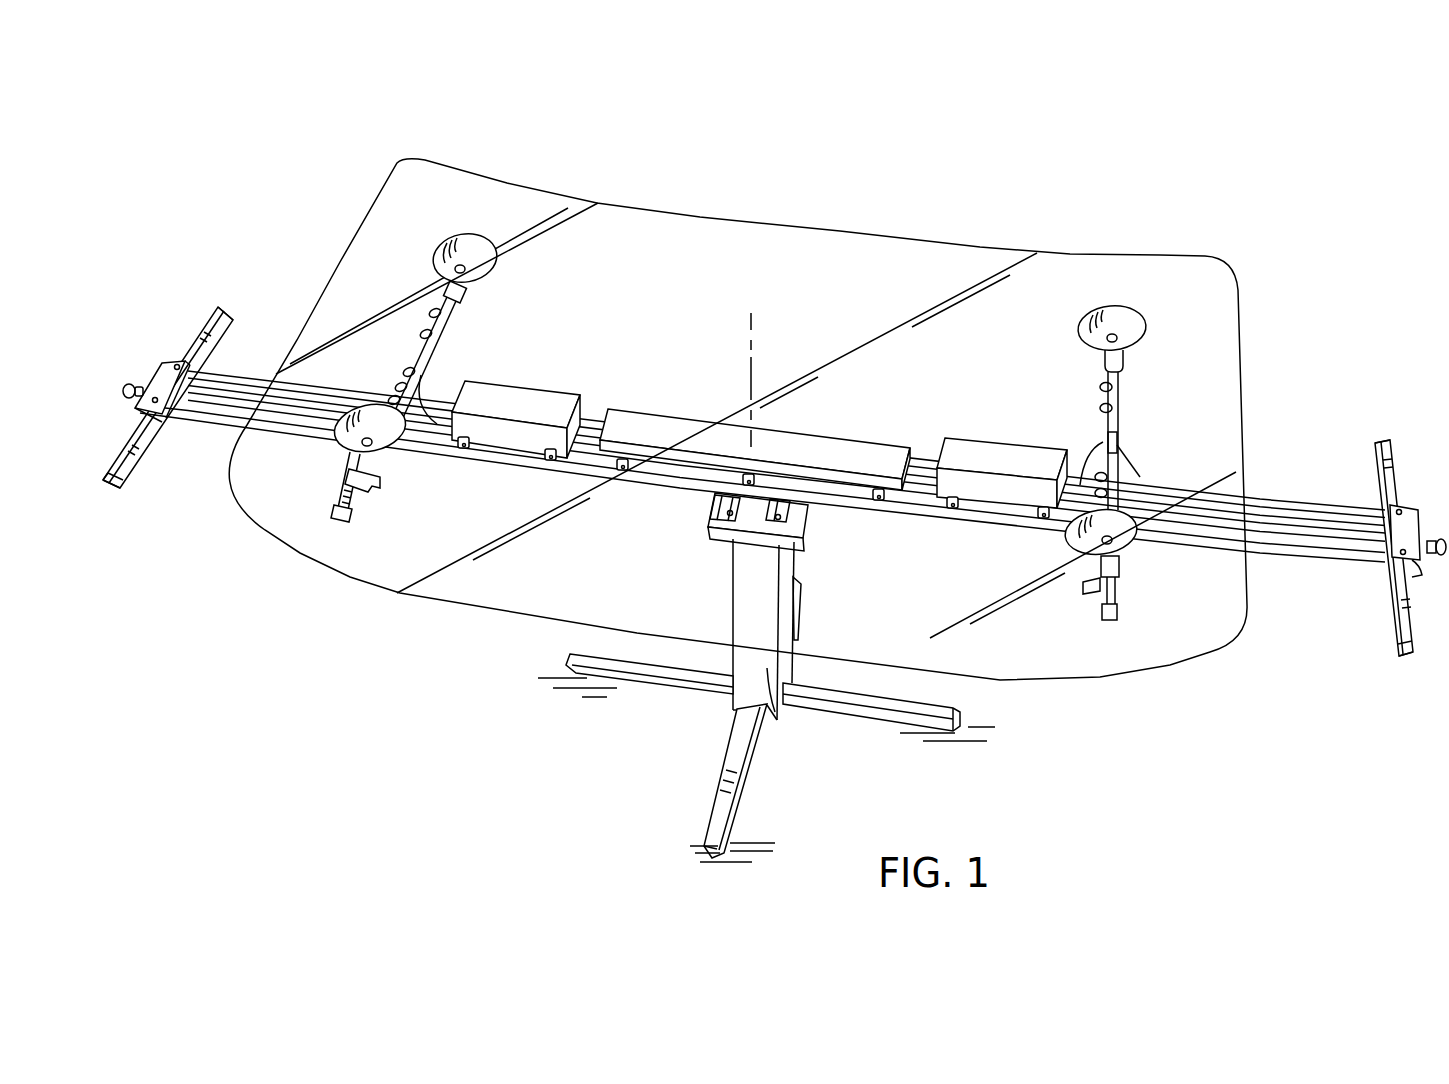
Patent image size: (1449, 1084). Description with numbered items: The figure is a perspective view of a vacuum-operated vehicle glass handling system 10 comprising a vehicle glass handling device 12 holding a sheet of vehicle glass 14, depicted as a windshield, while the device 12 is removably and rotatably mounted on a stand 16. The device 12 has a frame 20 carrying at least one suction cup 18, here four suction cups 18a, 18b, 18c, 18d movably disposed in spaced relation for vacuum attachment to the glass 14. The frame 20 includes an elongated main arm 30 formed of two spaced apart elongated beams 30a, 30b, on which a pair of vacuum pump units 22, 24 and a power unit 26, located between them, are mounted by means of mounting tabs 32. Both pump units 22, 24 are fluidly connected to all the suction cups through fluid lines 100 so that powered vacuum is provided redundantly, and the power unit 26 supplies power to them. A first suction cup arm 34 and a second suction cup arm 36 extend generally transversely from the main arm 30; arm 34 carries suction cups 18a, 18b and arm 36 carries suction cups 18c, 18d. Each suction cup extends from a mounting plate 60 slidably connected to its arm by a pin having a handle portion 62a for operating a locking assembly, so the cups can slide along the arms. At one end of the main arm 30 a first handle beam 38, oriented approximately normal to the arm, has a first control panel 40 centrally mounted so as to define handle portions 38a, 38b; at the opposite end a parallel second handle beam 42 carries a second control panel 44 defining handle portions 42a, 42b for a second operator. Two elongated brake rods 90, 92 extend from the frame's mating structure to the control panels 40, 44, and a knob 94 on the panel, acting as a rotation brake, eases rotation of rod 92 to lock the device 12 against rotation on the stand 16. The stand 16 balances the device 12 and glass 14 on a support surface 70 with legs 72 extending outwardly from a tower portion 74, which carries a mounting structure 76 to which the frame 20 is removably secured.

The vehicle glass handling system 10 is at (1082, 165).
The vehicle glass handling device 12 is at (210, 439).
The vehicle glass 14 is at (845, 228).
The stand 16 is at (731, 702).
The suction cup 18 is at (447, 230).
The suction cup 18a is at (466, 248).
The suction cup 18b is at (345, 445).
The suction cup 18c is at (1125, 318).
The suction cup 18d is at (1082, 548).
The frame 20 is at (1285, 569).
The vacuum pump unit 22 is at (533, 393).
The vacuum pump unit 24 is at (980, 452).
The power unit 26 is at (810, 440).
The elongated main arm 30 is at (1283, 494).
The elongated beam 30a is at (226, 420).
The elongated beam 30b is at (248, 374).
The mounting tab 32 is at (465, 450).
The first suction cup arm 34 is at (352, 514).
The second suction cup arm 36 is at (1118, 612).
The first handle beam 38 is at (228, 300).
The handle portion 38a is at (118, 486).
The handle portion 38b is at (212, 318).
The first control panel 40 is at (165, 360).
The second handle beam 42 is at (1391, 619).
The handle portion 42a is at (1407, 656).
The handle portion 42b is at (1383, 438).
The second control panel 44 is at (1412, 500).
The mounting plate 60 is at (470, 297).
The handle portion 62a is at (377, 487).
The support surface 70 is at (758, 845).
The leg 72 is at (801, 583).
The tower portion 74 is at (772, 710).
The mounting structure 76 is at (745, 512).
The elongated rod 90 is at (280, 373).
The elongated rod 92 is at (1337, 528).
The knob 94 is at (129, 384).
The fluid line 100 is at (418, 333).